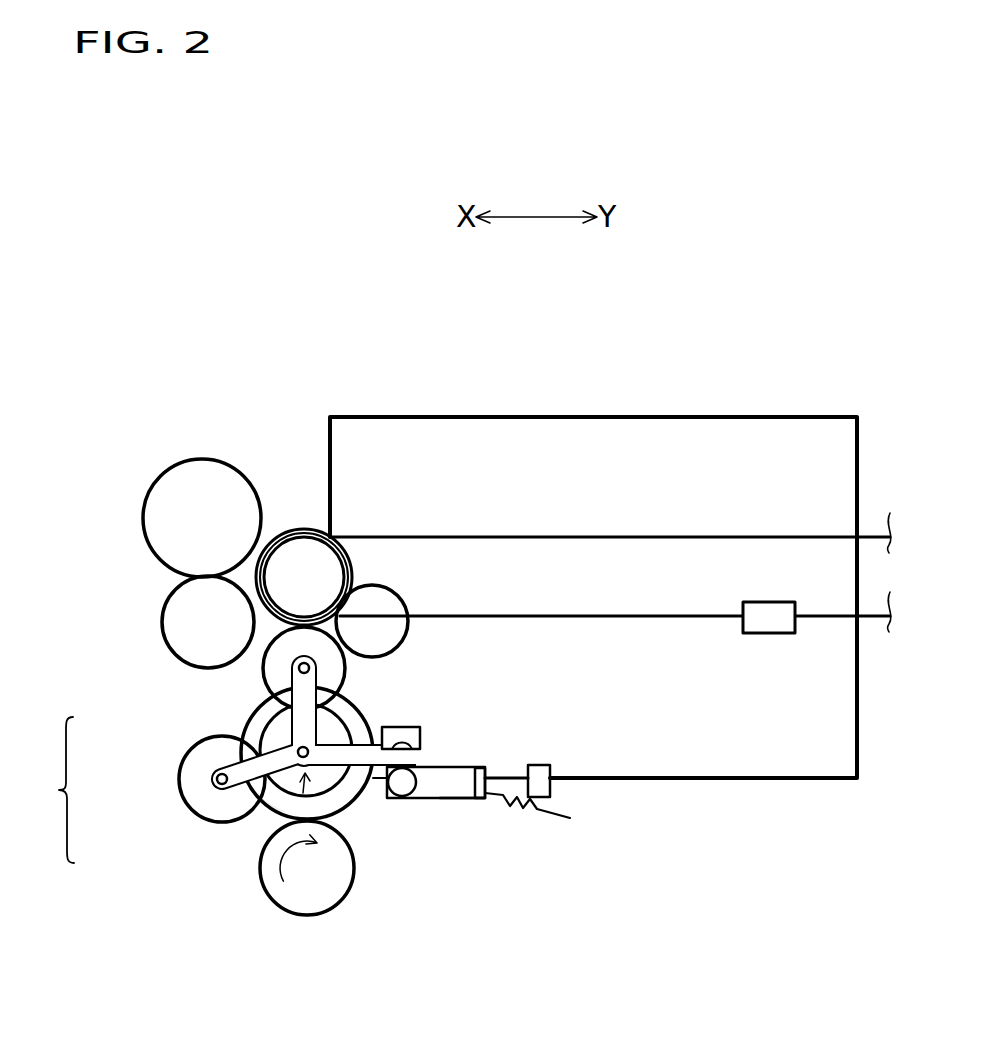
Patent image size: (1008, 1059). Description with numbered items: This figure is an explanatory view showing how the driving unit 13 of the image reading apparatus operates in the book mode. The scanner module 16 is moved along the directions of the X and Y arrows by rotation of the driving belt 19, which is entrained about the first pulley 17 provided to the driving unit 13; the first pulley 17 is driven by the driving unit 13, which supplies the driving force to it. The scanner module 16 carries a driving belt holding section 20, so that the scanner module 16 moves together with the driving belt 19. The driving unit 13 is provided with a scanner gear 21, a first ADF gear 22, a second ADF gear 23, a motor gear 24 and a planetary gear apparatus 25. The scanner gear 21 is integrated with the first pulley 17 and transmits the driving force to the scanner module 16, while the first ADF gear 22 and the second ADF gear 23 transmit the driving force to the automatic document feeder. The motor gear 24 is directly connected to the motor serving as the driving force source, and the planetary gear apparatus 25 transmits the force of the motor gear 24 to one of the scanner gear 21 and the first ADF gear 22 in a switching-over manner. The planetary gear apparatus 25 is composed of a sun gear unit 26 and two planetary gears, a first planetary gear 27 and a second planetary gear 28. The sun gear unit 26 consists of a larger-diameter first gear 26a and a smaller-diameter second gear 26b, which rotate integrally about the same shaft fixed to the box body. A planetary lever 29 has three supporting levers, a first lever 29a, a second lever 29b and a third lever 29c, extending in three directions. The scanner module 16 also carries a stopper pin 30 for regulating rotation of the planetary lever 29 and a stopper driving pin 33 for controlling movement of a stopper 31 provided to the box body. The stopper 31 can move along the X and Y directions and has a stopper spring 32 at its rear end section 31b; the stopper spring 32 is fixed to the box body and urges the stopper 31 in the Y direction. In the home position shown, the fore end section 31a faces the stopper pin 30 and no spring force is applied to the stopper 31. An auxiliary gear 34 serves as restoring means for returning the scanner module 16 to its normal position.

The driving unit 13 is at (80, 364).
The scanner module 16 is at (843, 416).
The first pulley 17 is at (302, 545).
The driving belt 19 is at (750, 536).
The driving belt holding section 20 is at (770, 626).
The scanner gear 21 is at (293, 529).
The first ADF gear 22 is at (164, 598).
The second ADF gear 23 is at (166, 468).
The motor gear 24 is at (275, 903).
The planetary gear apparatus 25 is at (43, 790).
The sun gear unit 26 is at (252, 810).
The first gear 26a is at (361, 793).
The second gear 26b is at (340, 803).
The first planetary gear 27 is at (180, 794).
The second planetary gear 28 is at (262, 672).
The planetary lever 29 is at (264, 812).
The first lever 29a is at (237, 768).
The second lever 29b is at (320, 710).
The third lever 29c is at (413, 766).
The stopper pin 30 is at (419, 727).
The stopper 31 is at (440, 777).
The fore end section 31a is at (468, 800).
The rear end section 31b is at (487, 768).
The stopper spring 32 is at (506, 800).
The stopper driving pin 33 is at (540, 765).
The auxiliary gear 34 is at (396, 604).